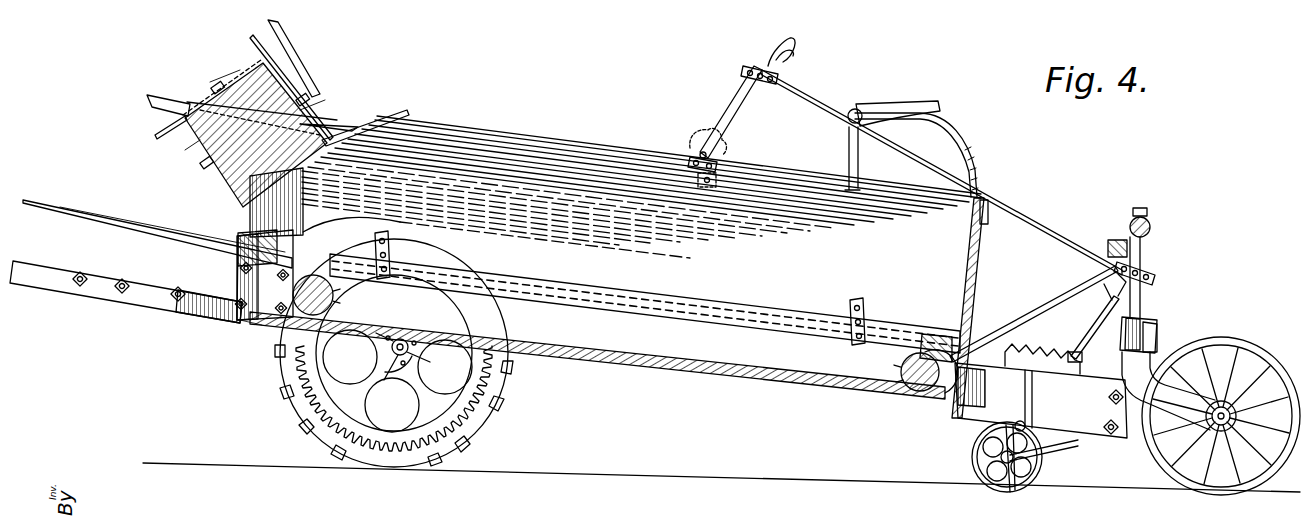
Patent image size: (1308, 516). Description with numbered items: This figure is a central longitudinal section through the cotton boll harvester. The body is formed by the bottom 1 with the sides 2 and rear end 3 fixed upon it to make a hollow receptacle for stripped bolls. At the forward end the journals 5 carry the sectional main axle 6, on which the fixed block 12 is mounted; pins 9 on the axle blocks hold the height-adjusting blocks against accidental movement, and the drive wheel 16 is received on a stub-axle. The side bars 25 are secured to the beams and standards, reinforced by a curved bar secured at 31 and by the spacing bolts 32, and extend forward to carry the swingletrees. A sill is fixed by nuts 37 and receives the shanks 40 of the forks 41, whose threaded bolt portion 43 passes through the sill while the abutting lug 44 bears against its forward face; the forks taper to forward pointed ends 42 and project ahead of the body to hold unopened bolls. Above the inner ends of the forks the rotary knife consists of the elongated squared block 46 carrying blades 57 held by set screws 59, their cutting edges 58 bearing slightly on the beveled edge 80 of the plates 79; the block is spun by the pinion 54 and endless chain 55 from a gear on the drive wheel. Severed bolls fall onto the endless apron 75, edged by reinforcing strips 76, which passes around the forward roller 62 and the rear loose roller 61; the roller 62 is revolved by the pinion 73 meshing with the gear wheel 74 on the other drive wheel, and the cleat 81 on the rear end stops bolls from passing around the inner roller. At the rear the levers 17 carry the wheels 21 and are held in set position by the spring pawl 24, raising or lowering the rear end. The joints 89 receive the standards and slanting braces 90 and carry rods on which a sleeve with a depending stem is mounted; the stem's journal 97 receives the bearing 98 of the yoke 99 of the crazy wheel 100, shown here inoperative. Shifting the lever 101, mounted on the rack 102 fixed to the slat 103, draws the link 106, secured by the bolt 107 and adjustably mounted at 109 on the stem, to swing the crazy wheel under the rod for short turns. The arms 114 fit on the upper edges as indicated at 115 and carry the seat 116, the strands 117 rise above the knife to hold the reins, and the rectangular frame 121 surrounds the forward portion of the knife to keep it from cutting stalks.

The bottom 1 is at (660, 385).
The sides 2 is at (490, 138).
The rear end 3 is at (965, 232).
The journals 5 is at (392, 405).
The sectional main axle 6 is at (388, 348).
The pins 9 is at (410, 365).
The block 12 is at (418, 356).
The drive wheel 16 is at (1030, 448).
The levers 17 is at (1098, 320).
The wheels 21 is at (972, 458).
The spring pawl 24 is at (1063, 352).
The side bars 25 is at (45, 282).
The securing points of reinforcing bar 31 is at (82, 292).
The spacing bolts 32 is at (126, 297).
The nuts 37 is at (262, 325).
The shanks 40 is at (238, 240).
The forks 41 is at (135, 208).
The forward pointed ends 42 is at (80, 205).
The threaded bolt portion 43 is at (238, 272).
The abutting lug 44 is at (235, 246).
The elongated squared block 46 is at (290, 78).
The pinion 54 is at (237, 262).
The endless chain 55 is at (360, 124).
The blades 57 is at (210, 82).
The cutting edges 58 is at (250, 38).
The set screws 59 is at (222, 84).
The loose roller 61 is at (920, 400).
The roller 62 is at (295, 315).
The pinion 73 is at (1214, 507).
The gear wheel 74 is at (505, 392).
The endless apron 75 is at (762, 370).
The reinforcing strips 76 is at (322, 262).
The plates 79 is at (400, 252).
The beveled edge 80 is at (250, 220).
The cleat 81 is at (933, 340).
The joints 89 is at (1150, 227).
The slanting braces 90 is at (1008, 360).
The journal 97 is at (1152, 325).
The bearing 98 is at (1162, 340).
The yoke 99 is at (1200, 345).
The crazy wheel 100 is at (1228, 490).
The lever 101 is at (740, 86).
The rack 102 is at (690, 150).
The slat 103 is at (722, 165).
The link 106 is at (805, 92).
The bolt 107 is at (773, 86).
The adjustable mounting 109 is at (1150, 270).
The arms 114 is at (950, 142).
The fitting points of arms 115 is at (990, 200).
The seat 116 is at (908, 100).
The strands 117 is at (282, 40).
The rectangular frame 121 is at (150, 97).